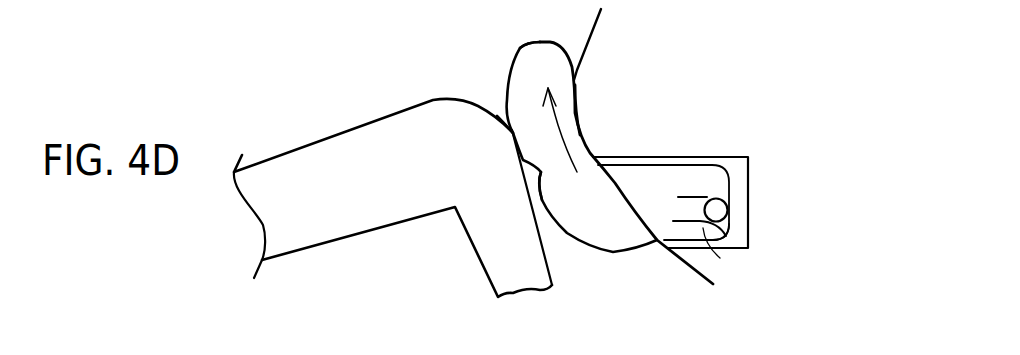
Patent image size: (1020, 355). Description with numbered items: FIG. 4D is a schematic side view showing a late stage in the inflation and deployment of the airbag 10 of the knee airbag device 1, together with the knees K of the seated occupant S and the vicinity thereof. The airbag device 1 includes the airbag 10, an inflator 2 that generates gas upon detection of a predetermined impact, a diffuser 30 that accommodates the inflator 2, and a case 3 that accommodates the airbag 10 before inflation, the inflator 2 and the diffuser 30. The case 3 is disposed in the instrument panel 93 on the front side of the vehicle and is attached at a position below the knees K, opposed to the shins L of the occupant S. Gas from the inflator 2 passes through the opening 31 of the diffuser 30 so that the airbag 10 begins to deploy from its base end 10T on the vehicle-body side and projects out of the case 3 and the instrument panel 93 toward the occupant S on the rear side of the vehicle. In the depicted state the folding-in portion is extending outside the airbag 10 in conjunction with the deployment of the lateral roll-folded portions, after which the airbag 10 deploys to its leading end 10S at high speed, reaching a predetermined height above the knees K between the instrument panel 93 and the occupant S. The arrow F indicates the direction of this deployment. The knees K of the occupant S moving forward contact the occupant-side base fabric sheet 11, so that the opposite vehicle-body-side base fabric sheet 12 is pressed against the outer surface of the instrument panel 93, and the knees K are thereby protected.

The airbag device 1 is at (755, 188).
The inflator 2 is at (716, 210).
The case 3 is at (750, 158).
The airbag 10 is at (623, 243).
The leading end 10S is at (540, 43).
The base end 10T is at (738, 234).
The occupant-side base fabric sheet 11 is at (540, 200).
The vehicle-body-side base fabric sheet 12 is at (577, 100).
The diffuser 30 is at (720, 258).
The opening 31 is at (673, 205).
The instrument panel 93 is at (580, 57).
The occupant S is at (300, 143).
The knees K is at (505, 127).
The pressing force F is at (555, 130).
The shins L is at (540, 242).